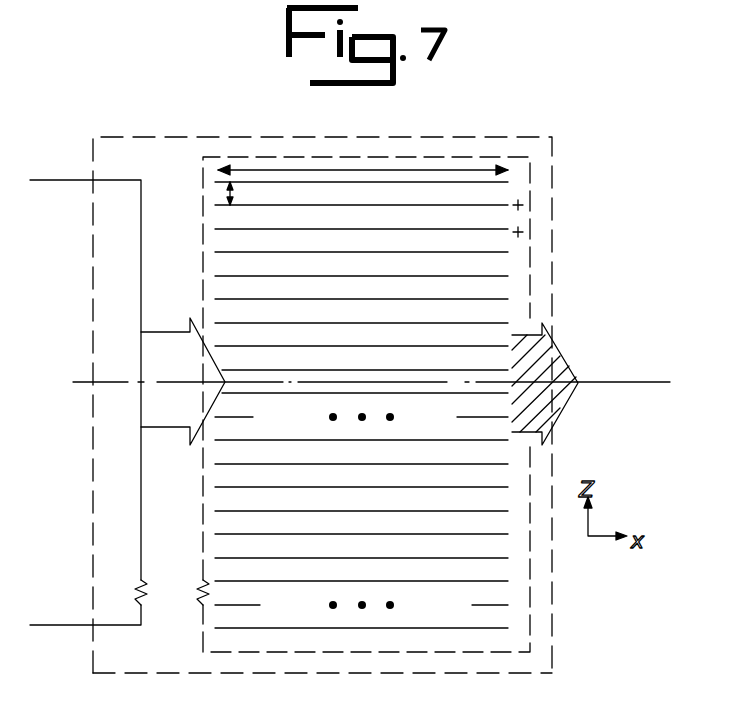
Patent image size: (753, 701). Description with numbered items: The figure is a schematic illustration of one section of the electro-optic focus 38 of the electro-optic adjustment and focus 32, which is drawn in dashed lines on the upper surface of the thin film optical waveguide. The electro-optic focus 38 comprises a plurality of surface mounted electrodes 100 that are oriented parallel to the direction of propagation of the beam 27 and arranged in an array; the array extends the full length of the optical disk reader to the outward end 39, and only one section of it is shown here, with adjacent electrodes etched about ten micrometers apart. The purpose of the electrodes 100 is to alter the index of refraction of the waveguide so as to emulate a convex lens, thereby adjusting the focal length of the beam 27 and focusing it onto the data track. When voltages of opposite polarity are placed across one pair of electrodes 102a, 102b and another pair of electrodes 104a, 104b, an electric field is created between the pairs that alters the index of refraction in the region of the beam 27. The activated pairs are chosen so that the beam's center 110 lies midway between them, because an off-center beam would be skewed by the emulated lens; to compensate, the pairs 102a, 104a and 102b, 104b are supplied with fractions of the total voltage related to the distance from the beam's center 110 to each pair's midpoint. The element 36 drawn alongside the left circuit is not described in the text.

The beam 27 is at (159, 333).
The electro-optic adjustment and focus 32 is at (317, 137).
The electrode circuit 36 is at (143, 195).
The electro-optic focus 38 is at (200, 292).
The outward end 39 is at (440, 675).
The surface mounted electrodes 100 is at (444, 184).
The electrode 102a is at (478, 252).
The electrode 102b is at (470, 228).
The electrode 104a is at (434, 557).
The electrode 104b is at (434, 533).
The beam's center 110 is at (97, 380).